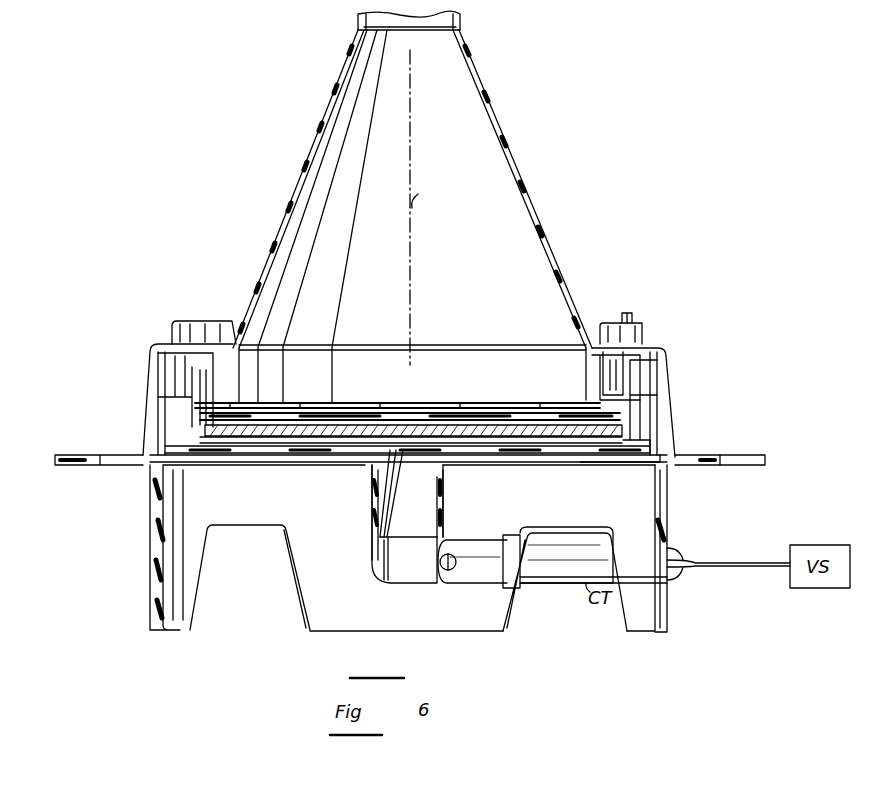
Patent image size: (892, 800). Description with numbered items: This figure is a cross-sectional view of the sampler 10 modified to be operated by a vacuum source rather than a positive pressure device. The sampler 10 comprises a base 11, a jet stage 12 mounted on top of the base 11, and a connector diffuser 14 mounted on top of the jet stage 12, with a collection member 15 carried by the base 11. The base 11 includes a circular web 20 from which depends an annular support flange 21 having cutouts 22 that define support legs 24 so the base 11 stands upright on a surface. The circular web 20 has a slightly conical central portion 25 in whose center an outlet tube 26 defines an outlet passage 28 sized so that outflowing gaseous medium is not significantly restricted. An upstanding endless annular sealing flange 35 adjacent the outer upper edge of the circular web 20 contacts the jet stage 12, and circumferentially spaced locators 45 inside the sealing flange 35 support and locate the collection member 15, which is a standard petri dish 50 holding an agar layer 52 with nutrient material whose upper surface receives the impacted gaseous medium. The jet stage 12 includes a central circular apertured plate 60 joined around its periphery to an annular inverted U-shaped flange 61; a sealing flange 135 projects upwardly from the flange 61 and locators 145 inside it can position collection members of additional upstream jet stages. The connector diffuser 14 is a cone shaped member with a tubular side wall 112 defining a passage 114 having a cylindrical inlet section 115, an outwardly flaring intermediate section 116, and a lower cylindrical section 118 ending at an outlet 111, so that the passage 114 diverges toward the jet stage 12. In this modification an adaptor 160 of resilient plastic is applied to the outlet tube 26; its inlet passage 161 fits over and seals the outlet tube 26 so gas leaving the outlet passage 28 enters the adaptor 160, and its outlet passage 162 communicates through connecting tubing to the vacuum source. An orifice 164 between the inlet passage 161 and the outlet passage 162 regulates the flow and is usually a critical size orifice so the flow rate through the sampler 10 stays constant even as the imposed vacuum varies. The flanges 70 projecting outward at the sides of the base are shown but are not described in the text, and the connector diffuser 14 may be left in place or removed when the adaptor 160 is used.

The sampler 10 is at (632, 286).
The base 11 is at (431, 560).
The jet stage 12 is at (450, 355).
The connector diffuser 14 is at (413, 205).
The collection member 15 is at (566, 460).
The circular web 20 is at (608, 462).
The annular support flange 21 is at (664, 496).
The cutouts 22 is at (250, 598).
The support legs 24 is at (393, 617).
The conical central portion 25 is at (478, 462).
The outlet tube 26 is at (446, 504).
The outlet passage 28 is at (400, 500).
The sealing flange 35 is at (676, 437).
The locators 45 is at (632, 462).
The petri dish 50 is at (262, 440).
The agar layer 52 is at (272, 440).
The apertured plate 60 is at (410, 417).
The inverted U-shaped flange 61 is at (675, 343).
The flange 70 is at (132, 448).
The outlet 111 is at (390, 403).
The tubular side wall 112 is at (490, 82).
The passage 114 is at (510, 172).
The cylindrical inlet section 115 is at (446, 30).
The outwardly flaring intermediate section 116 is at (539, 242).
The cylindrical section 118 is at (256, 362).
The sealing flange 135 is at (644, 326).
The locators 145 is at (620, 318).
The adaptor 160 is at (492, 586).
The inlet passage 161 is at (370, 543).
The outlet passage 162 is at (452, 552).
The orifice 164 is at (440, 562).